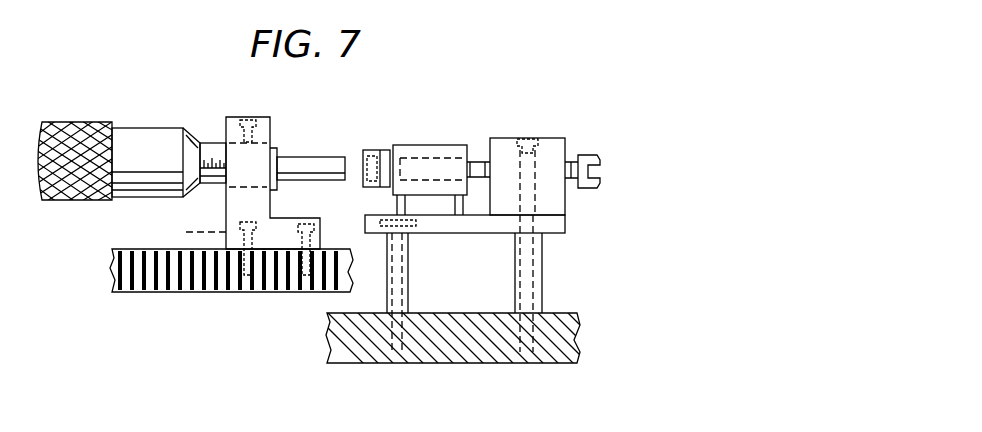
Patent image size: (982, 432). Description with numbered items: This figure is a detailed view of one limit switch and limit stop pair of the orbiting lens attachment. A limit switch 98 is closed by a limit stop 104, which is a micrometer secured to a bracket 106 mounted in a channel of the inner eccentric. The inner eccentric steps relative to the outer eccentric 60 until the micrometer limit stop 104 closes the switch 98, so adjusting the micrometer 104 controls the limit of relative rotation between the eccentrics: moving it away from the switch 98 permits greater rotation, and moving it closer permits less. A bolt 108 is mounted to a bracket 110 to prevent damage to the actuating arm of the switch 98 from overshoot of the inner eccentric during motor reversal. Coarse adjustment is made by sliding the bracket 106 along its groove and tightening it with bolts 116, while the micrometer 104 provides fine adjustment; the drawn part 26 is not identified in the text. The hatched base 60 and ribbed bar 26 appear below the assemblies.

The bracket 106 is at (233, 117).
The limit stop 104 is at (313, 157).
The bolts 116 is at (231, 245).
The ribbed bar 26 is at (117, 273).
The limit switch 98 is at (425, 150).
The bolt 108 is at (478, 162).
The bracket 110 is at (565, 224).
The outer eccentric ring member 60 is at (577, 347).